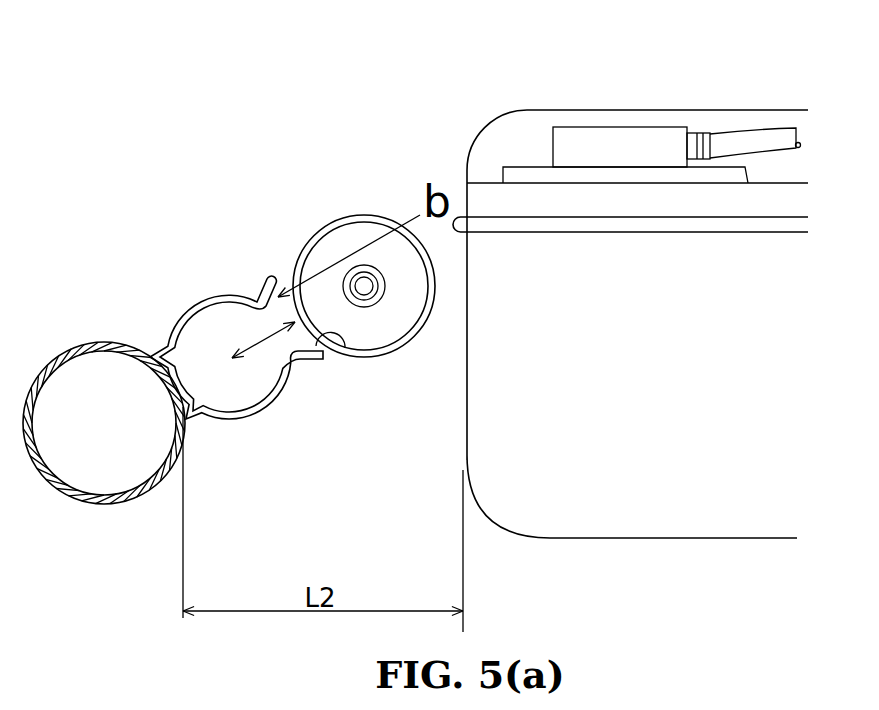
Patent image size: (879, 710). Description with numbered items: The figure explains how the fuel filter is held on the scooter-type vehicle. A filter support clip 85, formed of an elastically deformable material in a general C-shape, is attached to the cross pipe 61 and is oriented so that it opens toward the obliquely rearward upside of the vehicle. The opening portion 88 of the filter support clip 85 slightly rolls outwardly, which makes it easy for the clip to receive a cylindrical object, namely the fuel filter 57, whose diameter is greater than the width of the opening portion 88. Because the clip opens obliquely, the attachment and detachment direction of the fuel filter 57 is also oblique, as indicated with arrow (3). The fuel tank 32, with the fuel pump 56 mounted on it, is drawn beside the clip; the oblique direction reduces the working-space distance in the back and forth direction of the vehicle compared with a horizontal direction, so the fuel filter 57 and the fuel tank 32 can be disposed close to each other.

The arrow 3 is at (263, 343).
The fuel tank 32 is at (730, 539).
The fuel pump 56 is at (612, 130).
The fuel filter 57 is at (332, 220).
The cross pipe 61 is at (70, 347).
The filter support clip 85 is at (198, 302).
The opening portion 88 is at (350, 351).